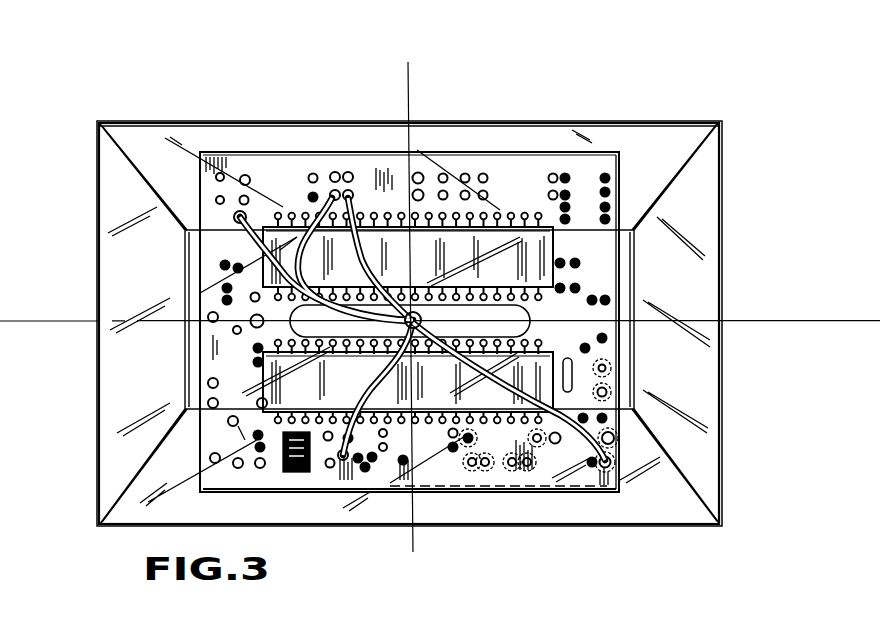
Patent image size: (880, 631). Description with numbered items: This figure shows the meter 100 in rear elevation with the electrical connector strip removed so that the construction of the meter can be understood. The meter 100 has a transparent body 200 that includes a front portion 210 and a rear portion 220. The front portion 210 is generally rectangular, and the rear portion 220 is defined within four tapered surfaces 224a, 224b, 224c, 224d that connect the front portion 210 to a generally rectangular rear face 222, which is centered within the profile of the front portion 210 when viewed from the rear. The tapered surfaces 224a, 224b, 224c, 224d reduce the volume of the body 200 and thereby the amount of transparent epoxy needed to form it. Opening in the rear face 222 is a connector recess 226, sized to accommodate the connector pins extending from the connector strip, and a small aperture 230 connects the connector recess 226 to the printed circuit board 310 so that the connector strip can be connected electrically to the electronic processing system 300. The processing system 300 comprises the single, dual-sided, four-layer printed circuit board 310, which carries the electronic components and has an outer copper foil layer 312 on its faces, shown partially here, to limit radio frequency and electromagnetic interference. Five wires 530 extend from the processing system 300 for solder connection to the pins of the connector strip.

The meter 100 is at (310, 27).
The transparent body 200 is at (729, 150).
The front portion 210 is at (172, 122).
The rear portion 220 is at (692, 301).
The rear face 222 is at (625, 352).
The tapered surface 224a is at (544, 133).
The tapered surface 224b is at (708, 452).
The tapered surface 224c is at (633, 513).
The tapered surface 224d is at (113, 405).
The connector recess 226 is at (300, 306).
The small aperture 230 is at (411, 530).
The electronic processing system 300 is at (622, 290).
The printed circuit board 310 is at (290, 152).
The copper foil layer 312 is at (498, 490).
The wires 530 is at (350, 200).